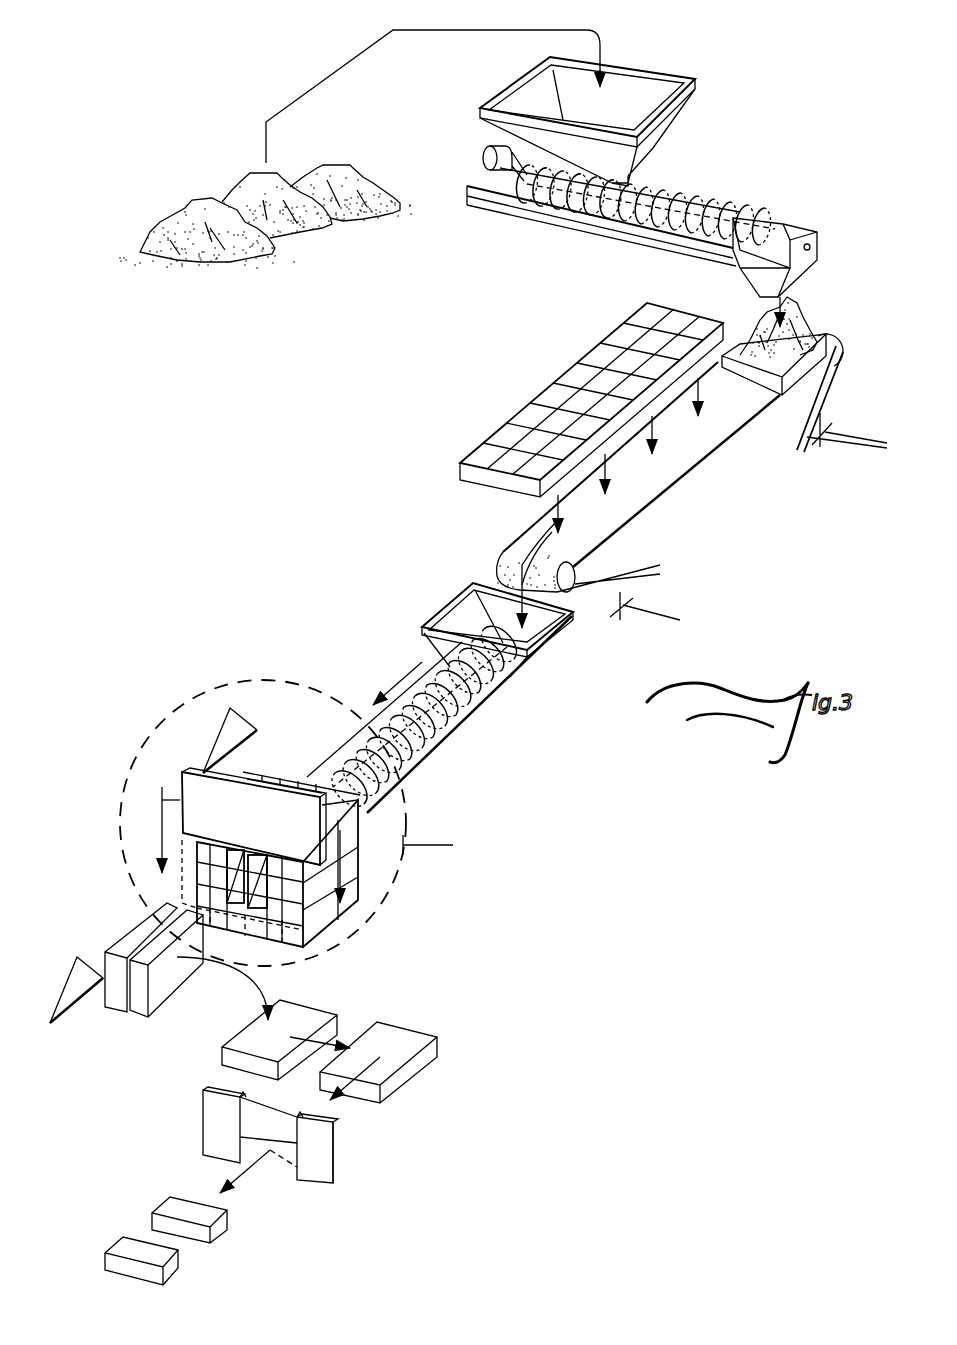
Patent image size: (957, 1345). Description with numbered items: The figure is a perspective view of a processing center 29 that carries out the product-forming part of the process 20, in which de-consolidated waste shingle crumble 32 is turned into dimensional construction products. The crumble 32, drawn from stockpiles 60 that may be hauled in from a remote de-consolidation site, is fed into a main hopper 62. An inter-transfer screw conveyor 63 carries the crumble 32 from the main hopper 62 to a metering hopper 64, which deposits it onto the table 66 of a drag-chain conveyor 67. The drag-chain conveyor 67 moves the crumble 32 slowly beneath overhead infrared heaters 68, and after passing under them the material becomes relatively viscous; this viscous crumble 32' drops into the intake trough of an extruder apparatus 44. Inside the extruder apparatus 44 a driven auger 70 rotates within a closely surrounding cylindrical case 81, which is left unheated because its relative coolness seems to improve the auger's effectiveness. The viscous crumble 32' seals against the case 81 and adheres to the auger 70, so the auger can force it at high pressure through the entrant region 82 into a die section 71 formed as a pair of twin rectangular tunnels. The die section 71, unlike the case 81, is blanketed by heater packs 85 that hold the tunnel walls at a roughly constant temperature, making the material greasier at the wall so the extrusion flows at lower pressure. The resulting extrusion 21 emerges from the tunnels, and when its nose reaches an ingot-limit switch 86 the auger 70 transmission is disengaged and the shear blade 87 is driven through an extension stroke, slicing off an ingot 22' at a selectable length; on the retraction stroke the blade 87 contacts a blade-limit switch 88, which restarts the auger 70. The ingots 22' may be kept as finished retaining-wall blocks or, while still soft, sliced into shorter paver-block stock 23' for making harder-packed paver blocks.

The process 20 is at (247, 100).
The processing center 29 is at (240, 85).
The crumble 32 is at (624, 193).
The stockpiles 60 is at (277, 183).
The main hopper 62 is at (668, 121).
The inter-transfer screw conveyor 63 is at (718, 203).
The metering hopper 64 is at (812, 262).
The drag-chain conveyor 67 is at (830, 355).
The table 66 is at (680, 437).
The overhead infrared heaters 68 is at (580, 360).
The viscous crumble 32' is at (492, 574).
The driven auger 70 is at (500, 712).
The extruder apparatus 44 is at (508, 703).
The cylindrical case 81 is at (423, 662).
The die section 71 is at (300, 775).
The entrant region 82 is at (363, 680).
The blade-limit switch 88 is at (225, 718).
The shear blade 87 is at (190, 783).
The heater packs 85 is at (353, 873).
The ingot-limit switch 86 is at (77, 957).
The extrusion 21 is at (153, 997).
The ingots 22' is at (329, 1039).
The paver-block stock 23' is at (221, 1186).